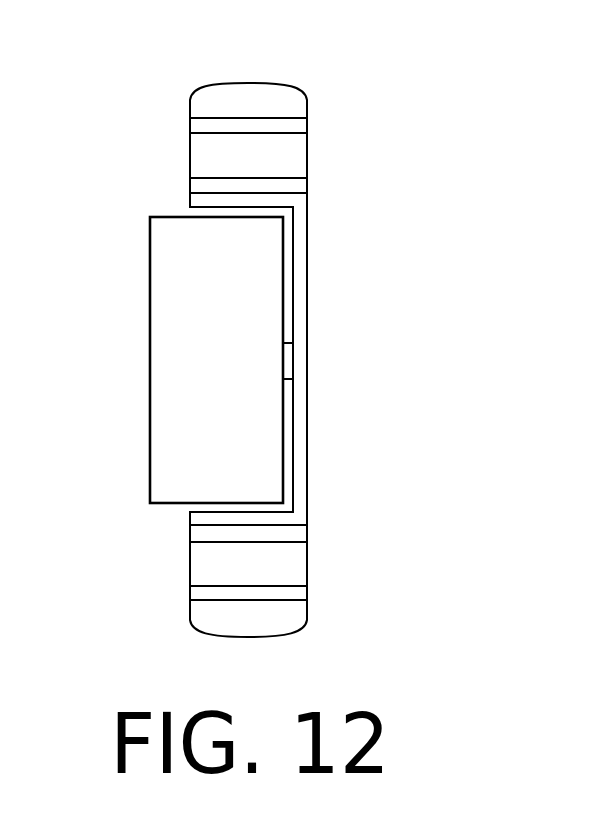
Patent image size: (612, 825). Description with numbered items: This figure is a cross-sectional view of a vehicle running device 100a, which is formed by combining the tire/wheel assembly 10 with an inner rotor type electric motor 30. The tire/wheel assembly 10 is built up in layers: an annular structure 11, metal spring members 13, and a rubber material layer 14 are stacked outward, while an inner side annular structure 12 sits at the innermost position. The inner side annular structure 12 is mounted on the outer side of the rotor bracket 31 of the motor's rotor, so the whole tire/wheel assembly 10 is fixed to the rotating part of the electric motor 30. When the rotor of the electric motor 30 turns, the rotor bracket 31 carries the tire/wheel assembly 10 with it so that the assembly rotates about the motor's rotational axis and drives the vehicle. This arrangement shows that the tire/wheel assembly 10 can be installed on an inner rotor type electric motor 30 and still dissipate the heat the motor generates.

The vehicle running device 100a is at (413, 74).
The tire/wheel assembly 10 is at (385, 78).
The rubber material layer 14 is at (307, 97).
The annular structure 11 is at (307, 124).
The metal spring members 13 is at (307, 156).
The inner side annular structure 12 is at (307, 184).
The rotor bracket 31 is at (300, 260).
The inner rotor type electric motor 30 is at (134, 298).